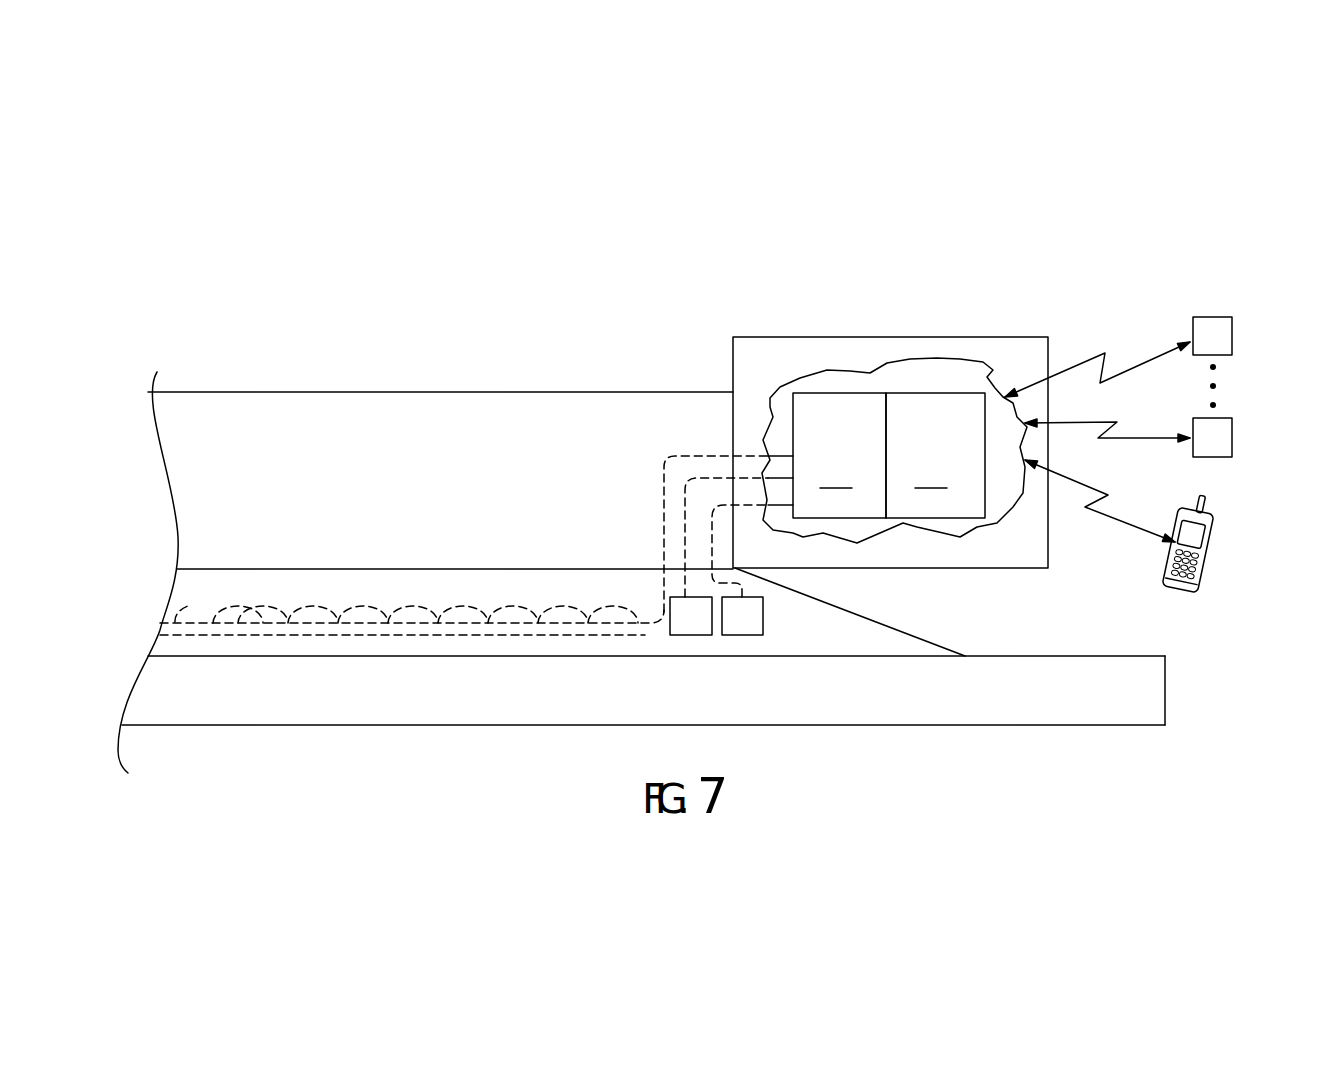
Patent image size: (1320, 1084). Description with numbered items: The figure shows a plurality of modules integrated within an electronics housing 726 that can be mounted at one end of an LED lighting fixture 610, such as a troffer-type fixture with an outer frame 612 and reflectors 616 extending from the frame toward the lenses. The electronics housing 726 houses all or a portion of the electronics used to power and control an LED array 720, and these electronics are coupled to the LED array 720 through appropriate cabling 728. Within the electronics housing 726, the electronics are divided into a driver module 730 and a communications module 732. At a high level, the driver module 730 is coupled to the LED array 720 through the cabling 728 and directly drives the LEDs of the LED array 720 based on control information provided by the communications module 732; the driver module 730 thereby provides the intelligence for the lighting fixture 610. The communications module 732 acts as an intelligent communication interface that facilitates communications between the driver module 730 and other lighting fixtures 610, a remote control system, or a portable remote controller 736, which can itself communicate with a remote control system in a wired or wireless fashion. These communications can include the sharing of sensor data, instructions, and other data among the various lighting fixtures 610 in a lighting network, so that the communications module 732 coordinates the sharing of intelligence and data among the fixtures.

The lighting fixture 610 is at (360, 278).
The outer frame 612 is at (1102, 655).
The reflector 616 is at (908, 632).
The LED array 720 is at (377, 607).
The electronics housing 726 is at (942, 337).
The cabling 728 is at (697, 510).
The driver module 730 is at (827, 455).
The communications module 732 is at (935, 455).
The portable remote controller 736 is at (1215, 530).